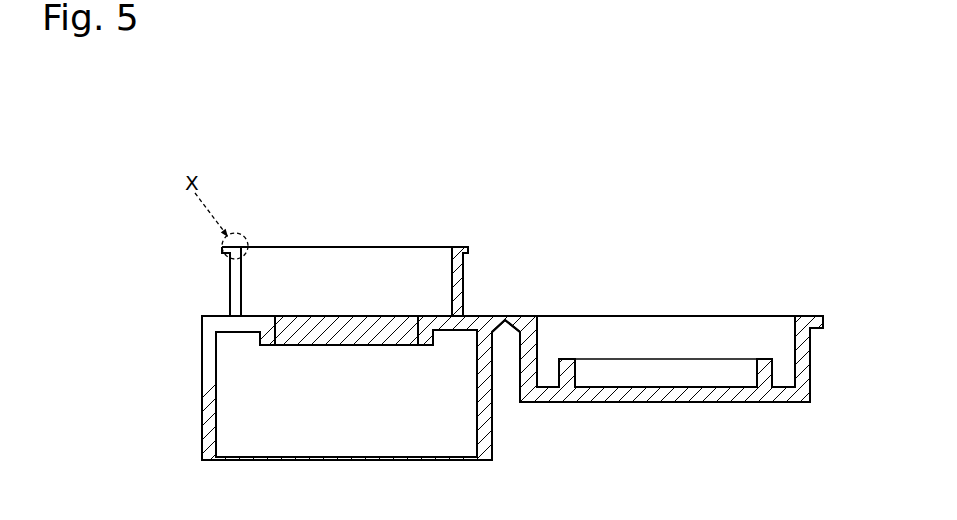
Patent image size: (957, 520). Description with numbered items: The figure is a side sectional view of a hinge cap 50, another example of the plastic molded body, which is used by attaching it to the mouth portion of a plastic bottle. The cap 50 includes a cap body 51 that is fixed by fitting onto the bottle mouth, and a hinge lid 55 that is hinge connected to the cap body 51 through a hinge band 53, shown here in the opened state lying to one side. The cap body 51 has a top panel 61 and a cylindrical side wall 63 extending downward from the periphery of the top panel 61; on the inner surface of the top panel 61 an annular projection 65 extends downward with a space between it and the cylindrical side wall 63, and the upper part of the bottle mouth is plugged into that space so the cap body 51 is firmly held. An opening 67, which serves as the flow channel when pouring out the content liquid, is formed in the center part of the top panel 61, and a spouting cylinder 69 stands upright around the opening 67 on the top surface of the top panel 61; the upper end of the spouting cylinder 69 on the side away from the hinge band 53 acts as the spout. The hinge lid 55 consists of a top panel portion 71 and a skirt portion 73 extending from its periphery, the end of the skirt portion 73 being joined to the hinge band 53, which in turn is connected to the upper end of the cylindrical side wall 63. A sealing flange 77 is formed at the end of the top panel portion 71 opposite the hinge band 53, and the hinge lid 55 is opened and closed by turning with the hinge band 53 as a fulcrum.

The hinge cap 50 is at (152, 268).
The cap body 51 is at (335, 206).
The hinge band 53 is at (505, 318).
The hinge lid 55 is at (663, 268).
The top panel 61 is at (240, 333).
The cylindrical side wall 63 is at (202, 402).
The annular projection 65 is at (426, 336).
The opening 67 is at (357, 335).
The spouting cylinder 69 is at (452, 280).
The top panel portion 71 is at (688, 402).
The skirt portion 73 is at (812, 388).
The sealing flange 77 is at (815, 330).